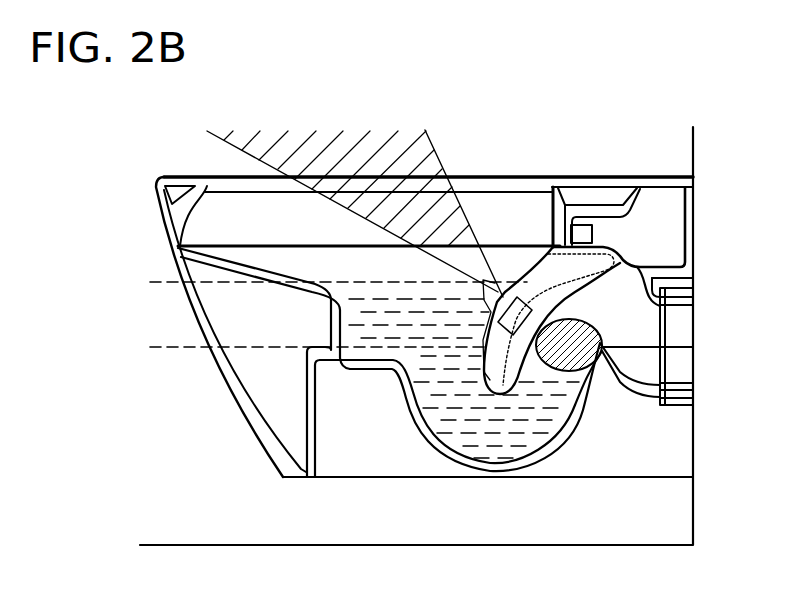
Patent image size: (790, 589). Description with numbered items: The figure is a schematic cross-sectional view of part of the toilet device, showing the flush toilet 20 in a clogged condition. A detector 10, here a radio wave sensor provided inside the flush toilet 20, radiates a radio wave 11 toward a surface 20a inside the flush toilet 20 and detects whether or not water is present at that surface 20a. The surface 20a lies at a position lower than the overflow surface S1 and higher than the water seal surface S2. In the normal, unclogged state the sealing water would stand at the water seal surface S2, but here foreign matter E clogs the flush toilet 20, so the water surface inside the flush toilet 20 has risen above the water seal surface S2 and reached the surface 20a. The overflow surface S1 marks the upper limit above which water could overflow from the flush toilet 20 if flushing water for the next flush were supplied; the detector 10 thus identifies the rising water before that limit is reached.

The detector 10 is at (527, 300).
The radio wave 11 is at (350, 160).
The flush toilet 20 is at (158, 178).
The surface 20a is at (492, 306).
The overflow surface S1 is at (319, 285).
The water seal surface S2 is at (299, 349).
The foreign matter E is at (573, 352).